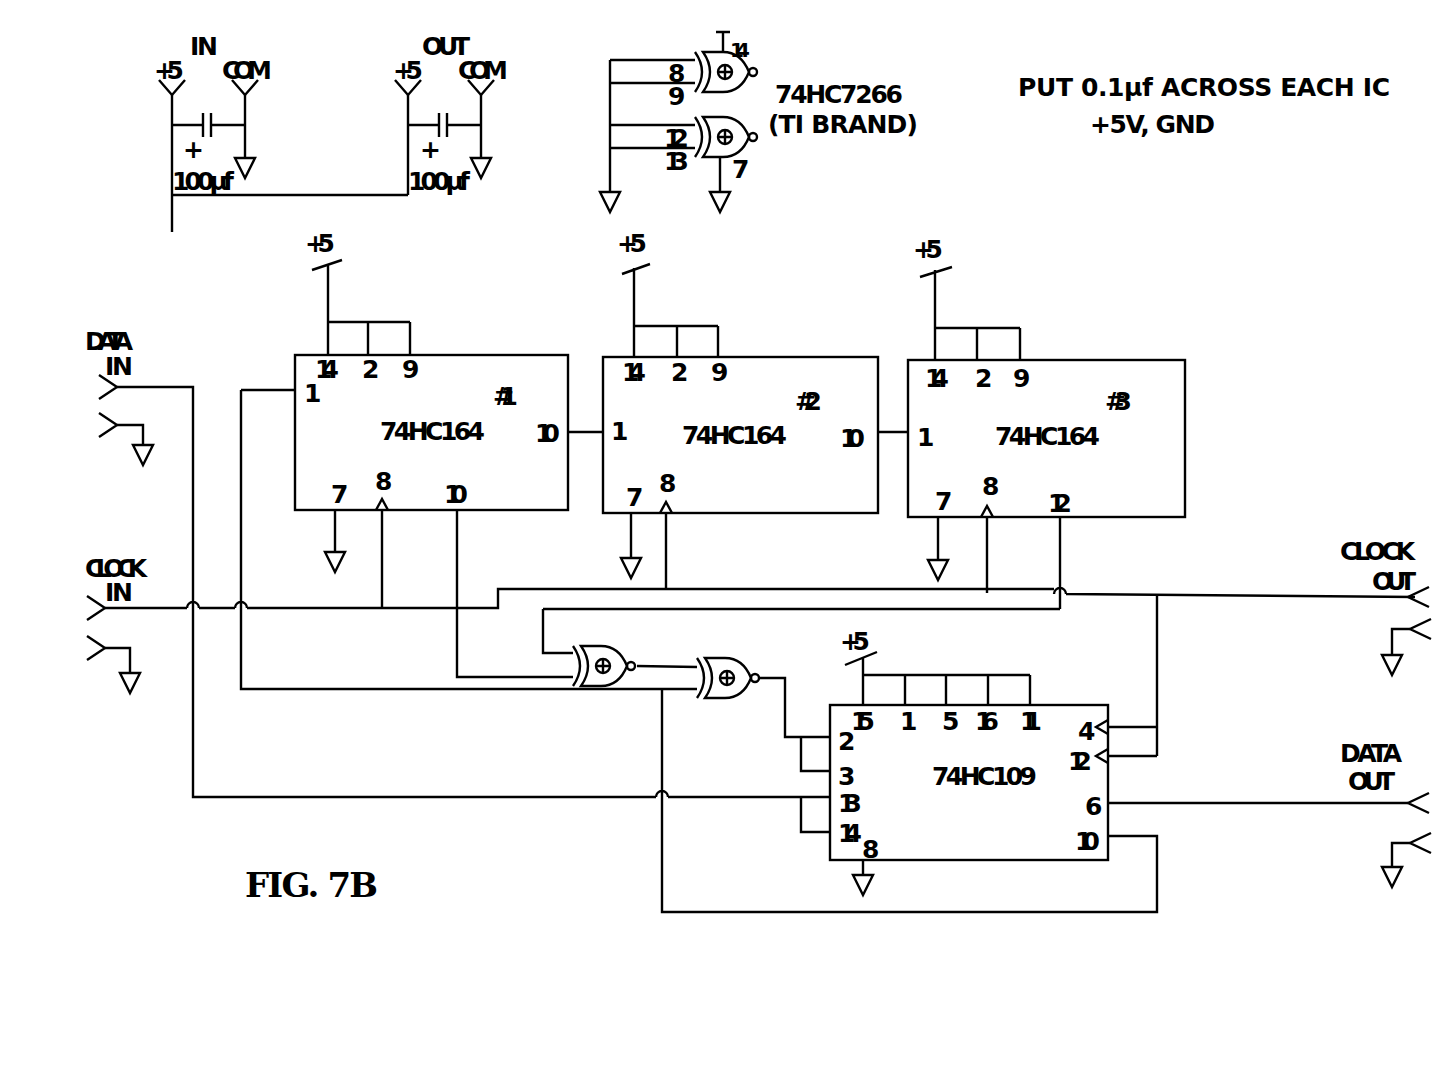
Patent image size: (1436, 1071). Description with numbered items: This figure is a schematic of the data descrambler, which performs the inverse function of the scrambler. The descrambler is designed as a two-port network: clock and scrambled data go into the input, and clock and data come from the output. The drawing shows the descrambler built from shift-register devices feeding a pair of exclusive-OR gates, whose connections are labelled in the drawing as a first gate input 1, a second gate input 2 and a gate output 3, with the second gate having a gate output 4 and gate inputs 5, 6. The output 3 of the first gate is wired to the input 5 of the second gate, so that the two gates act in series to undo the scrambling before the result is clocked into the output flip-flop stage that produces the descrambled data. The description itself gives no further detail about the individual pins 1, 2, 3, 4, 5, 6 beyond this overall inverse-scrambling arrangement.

The exclusive-OR gate input pin 1 is at (567, 684).
The exclusive-OR gate input pin 2 is at (628, 659).
The exclusive-OR gate output pin 3 is at (635, 659).
The exclusive-OR gate output pin 4 is at (755, 711).
The exclusive-OR gate input pin 5 is at (755, 714).
The exclusive-OR gate input pin 6 is at (755, 714).